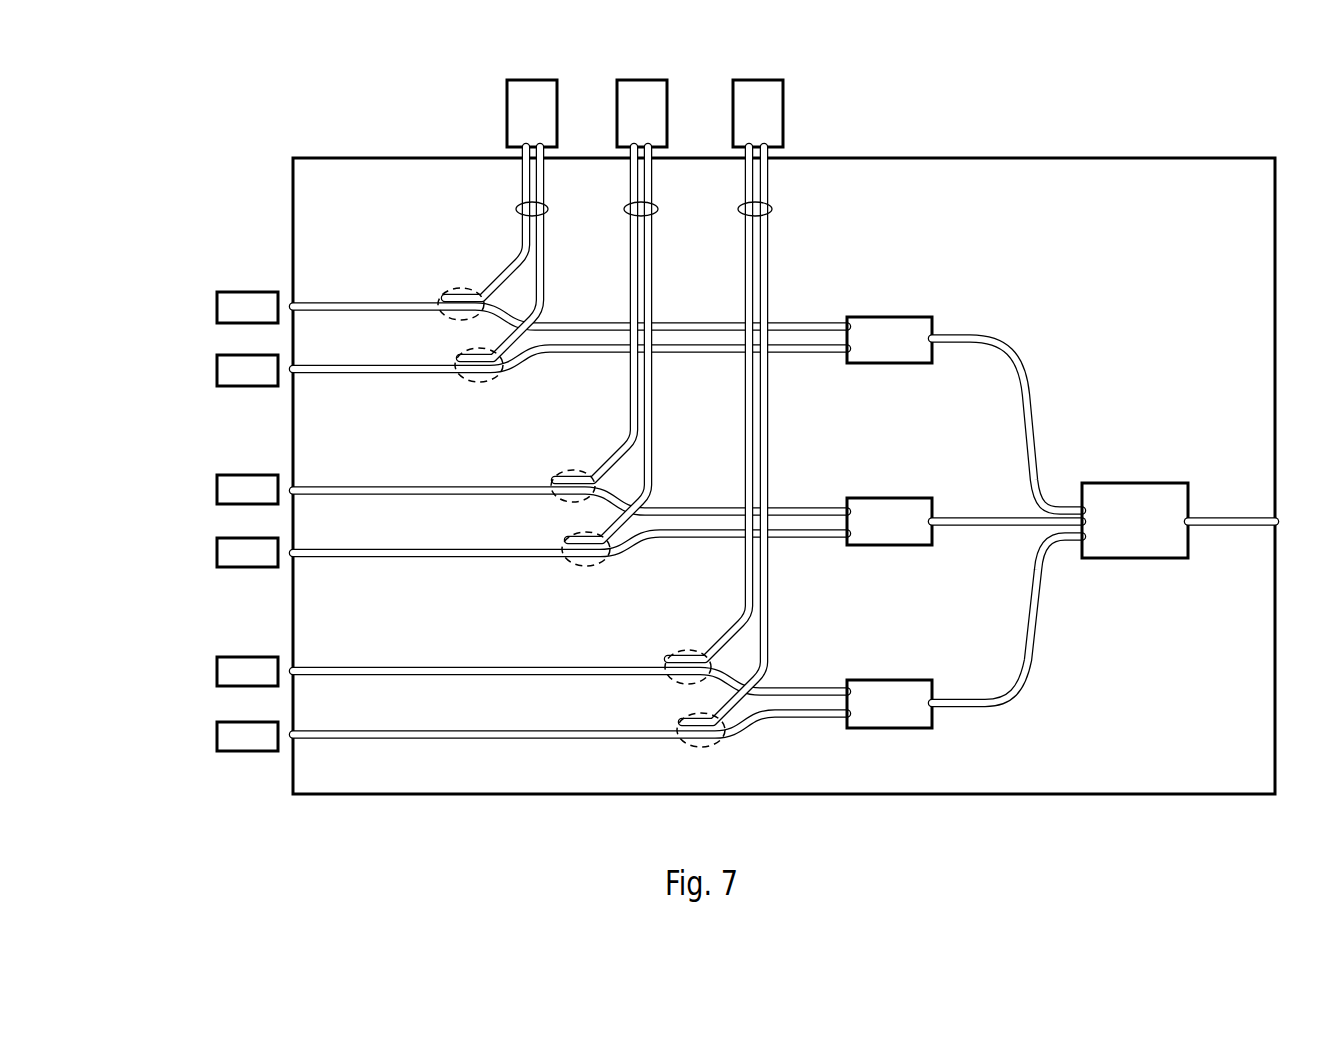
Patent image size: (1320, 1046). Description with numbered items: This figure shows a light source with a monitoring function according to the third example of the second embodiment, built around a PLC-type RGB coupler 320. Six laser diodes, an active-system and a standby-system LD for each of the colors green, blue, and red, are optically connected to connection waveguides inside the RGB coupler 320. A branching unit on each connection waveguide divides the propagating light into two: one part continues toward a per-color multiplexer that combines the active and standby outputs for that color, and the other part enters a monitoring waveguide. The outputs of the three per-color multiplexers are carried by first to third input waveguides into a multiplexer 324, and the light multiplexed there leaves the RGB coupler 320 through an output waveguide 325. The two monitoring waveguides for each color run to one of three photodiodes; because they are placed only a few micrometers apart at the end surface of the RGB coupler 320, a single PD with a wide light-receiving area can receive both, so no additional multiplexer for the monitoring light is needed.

The RGB coupler 320 is at (1090, 158).
The multiplexer 324 is at (1112, 483).
The output waveguide 325 is at (1235, 517).